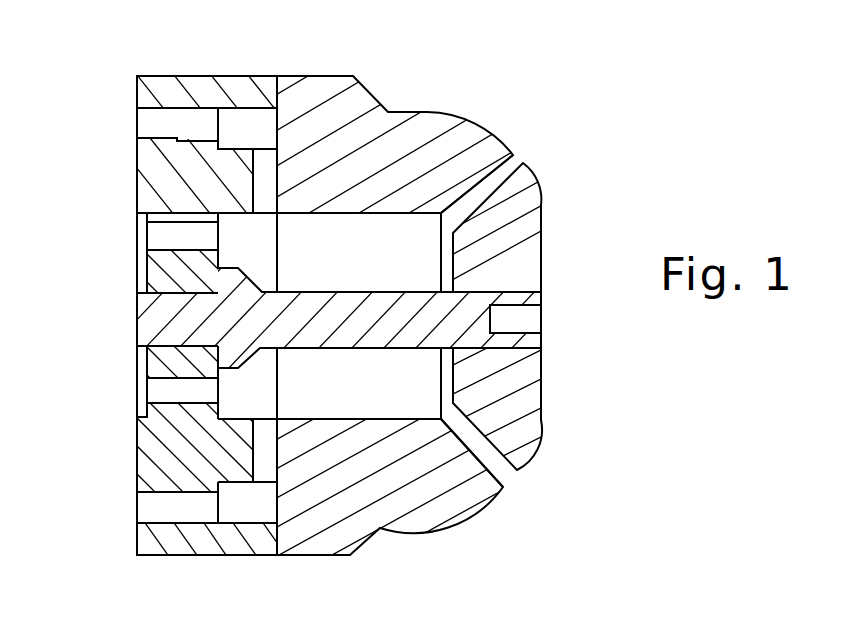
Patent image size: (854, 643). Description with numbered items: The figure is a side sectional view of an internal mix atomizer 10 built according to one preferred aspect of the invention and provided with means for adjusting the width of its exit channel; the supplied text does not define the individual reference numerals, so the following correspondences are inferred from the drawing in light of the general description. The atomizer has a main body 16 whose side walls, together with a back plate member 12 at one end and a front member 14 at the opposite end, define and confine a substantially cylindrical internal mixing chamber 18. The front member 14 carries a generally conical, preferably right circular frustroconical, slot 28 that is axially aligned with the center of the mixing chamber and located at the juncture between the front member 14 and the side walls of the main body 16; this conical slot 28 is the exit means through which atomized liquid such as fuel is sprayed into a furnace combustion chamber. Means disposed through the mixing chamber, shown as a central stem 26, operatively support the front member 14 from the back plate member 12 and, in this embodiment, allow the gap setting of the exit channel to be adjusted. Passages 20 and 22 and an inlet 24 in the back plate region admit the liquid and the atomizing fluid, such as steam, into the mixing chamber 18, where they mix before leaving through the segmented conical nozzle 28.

The assembly 10 is at (430, 81).
The housing ring / retainer 12 is at (179, 76).
The end cap 14 is at (563, 208).
The main body 16 is at (387, 419).
The chamber 18 is at (173, 237).
The cavity 20 is at (164, 133).
The end plate 22 is at (116, 237).
The end wall 24 is at (118, 123).
The shaft 26 is at (345, 333).
The seal gap 28 is at (517, 161).